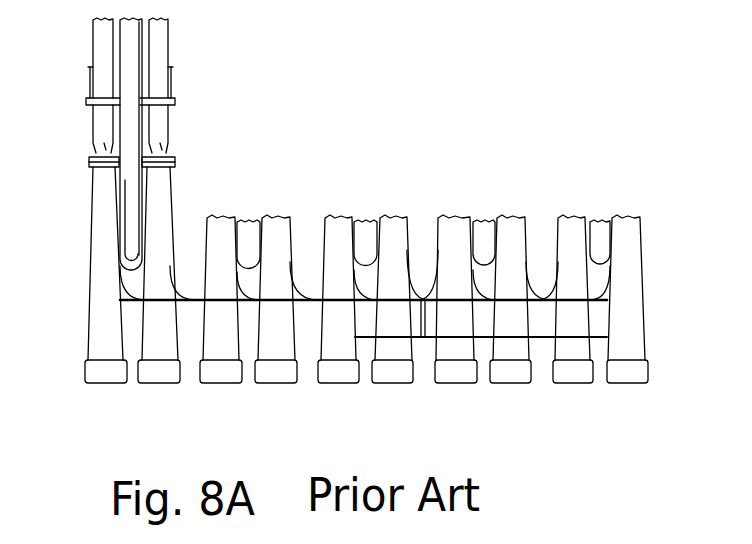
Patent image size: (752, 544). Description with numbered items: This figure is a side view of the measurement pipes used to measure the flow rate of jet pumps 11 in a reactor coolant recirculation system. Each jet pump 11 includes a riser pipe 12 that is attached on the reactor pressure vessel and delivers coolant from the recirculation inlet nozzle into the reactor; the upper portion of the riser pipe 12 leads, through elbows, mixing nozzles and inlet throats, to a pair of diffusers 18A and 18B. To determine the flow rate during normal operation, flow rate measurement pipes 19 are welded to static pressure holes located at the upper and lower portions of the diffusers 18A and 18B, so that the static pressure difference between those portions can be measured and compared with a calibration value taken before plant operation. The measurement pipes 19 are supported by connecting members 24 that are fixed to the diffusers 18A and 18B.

The jet pump 11 is at (170, 131).
The riser pipe 12 is at (130, 131).
The diffuser 18A is at (102, 340).
The diffuser 18B is at (162, 342).
The flow rate measurement pipe 19 is at (408, 222).
The connecting member 24 is at (553, 338).